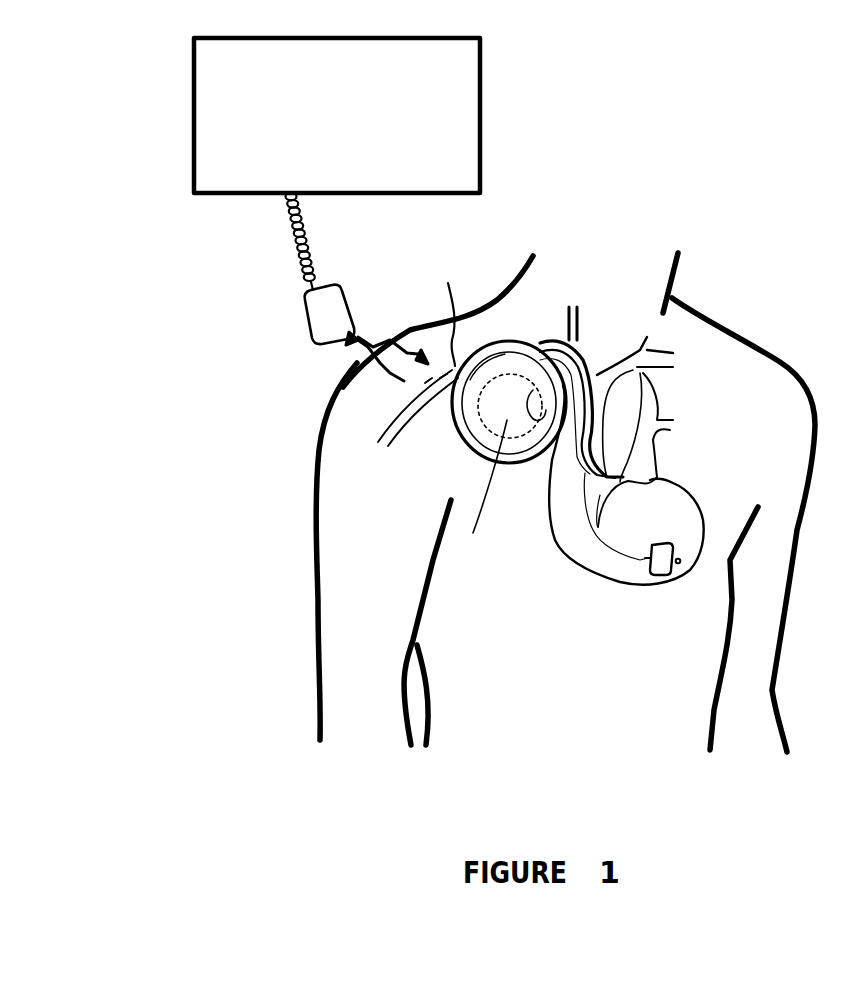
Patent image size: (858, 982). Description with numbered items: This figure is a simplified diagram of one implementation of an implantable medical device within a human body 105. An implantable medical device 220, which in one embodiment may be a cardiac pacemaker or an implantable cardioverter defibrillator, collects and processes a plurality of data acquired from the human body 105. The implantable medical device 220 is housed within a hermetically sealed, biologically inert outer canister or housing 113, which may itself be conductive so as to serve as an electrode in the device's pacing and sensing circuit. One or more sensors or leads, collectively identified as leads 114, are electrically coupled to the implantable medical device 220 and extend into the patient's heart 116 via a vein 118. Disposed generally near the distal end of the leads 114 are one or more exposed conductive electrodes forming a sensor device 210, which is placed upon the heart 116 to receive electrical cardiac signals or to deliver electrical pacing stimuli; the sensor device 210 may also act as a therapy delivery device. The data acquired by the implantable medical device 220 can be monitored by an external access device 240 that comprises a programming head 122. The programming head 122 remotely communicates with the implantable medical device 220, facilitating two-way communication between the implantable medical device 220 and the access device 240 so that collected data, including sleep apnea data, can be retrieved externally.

The human body 105 is at (784, 361).
The outer canister or housing 113 is at (466, 441).
The leads 114 is at (517, 468).
The heart 116 is at (650, 586).
The vein 118 is at (421, 353).
The programming head 122 is at (341, 295).
The sensor device 210 is at (683, 540).
The implantable medical device 220 is at (483, 492).
The access device 240 is at (230, 194).